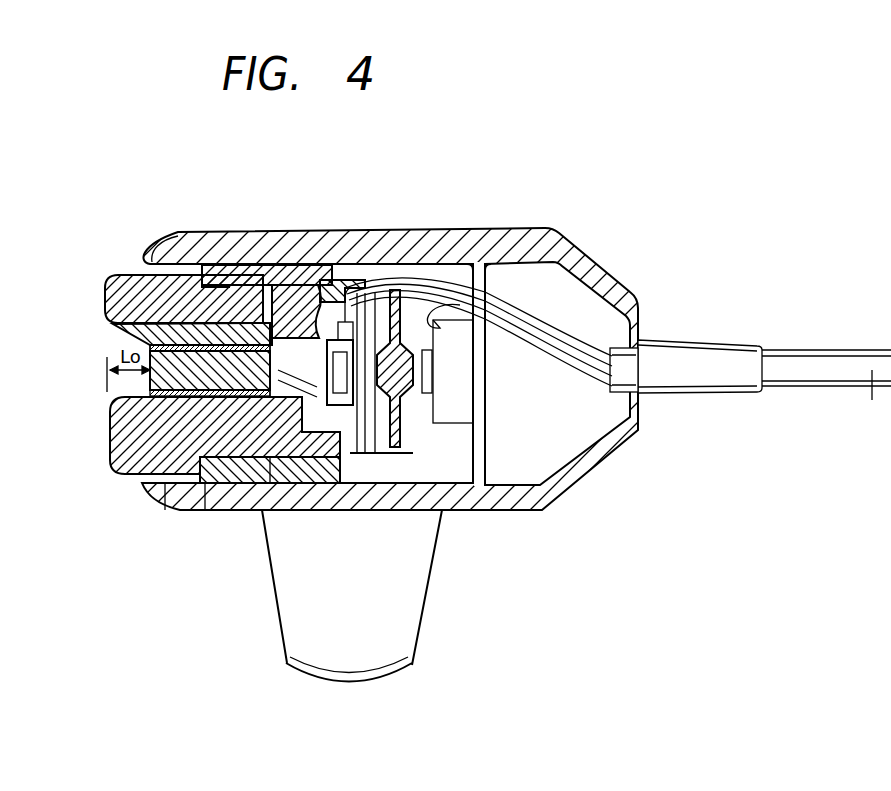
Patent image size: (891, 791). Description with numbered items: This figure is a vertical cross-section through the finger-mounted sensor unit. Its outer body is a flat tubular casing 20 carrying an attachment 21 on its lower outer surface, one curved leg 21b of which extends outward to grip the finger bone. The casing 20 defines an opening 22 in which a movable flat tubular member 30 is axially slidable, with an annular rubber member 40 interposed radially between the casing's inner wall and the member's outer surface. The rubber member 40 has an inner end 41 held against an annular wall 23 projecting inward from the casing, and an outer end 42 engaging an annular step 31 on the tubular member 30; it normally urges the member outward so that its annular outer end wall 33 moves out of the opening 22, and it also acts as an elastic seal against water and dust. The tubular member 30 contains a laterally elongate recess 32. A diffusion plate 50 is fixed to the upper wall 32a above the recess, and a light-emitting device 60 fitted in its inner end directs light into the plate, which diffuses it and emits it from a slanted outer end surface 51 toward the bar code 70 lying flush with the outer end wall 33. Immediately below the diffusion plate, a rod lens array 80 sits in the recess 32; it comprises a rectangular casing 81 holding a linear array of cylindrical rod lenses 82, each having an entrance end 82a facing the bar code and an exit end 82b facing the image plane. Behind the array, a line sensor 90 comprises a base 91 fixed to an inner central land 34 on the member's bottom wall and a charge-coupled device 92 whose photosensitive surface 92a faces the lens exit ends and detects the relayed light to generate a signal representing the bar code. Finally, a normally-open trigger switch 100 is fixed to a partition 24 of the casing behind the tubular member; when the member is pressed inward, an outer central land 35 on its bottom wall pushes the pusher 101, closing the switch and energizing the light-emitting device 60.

The flat tubular casing 20 is at (428, 226).
The attachment 21 is at (292, 635).
The curved leg 21b is at (427, 625).
The opening 22 is at (150, 262).
The annular wall 23 is at (360, 290).
The partition 24 is at (480, 410).
The flat tubular member 30 is at (185, 486).
The annular step 31 is at (220, 486).
The recess 32 is at (306, 488).
The upper wall 32a is at (115, 336).
The annular outer end wall 33 is at (140, 468).
The inner central land 34 is at (412, 455).
The outer central land 35 is at (405, 398).
The annular rubber member 40 is at (238, 268).
The inner end 41 is at (310, 290).
The outer end 42 is at (214, 265).
The diffusion plate 50 is at (128, 288).
The slanted outer end surface 51 is at (112, 343).
The light-emitting device 60 is at (270, 290).
The bar code 70 is at (150, 377).
The rod lens array 80 is at (190, 479).
The casing 81 is at (240, 485).
The rod lens 82 is at (215, 446).
The entrance end 82a is at (300, 373).
The exit end 82b is at (276, 485).
The line sensor 90 is at (362, 455).
The base 91 is at (385, 290).
The charge-coupled device 92 is at (340, 406).
The photosensitive surface 92a is at (345, 300).
The trigger switch 100 is at (460, 425).
The pusher 101 is at (458, 377).